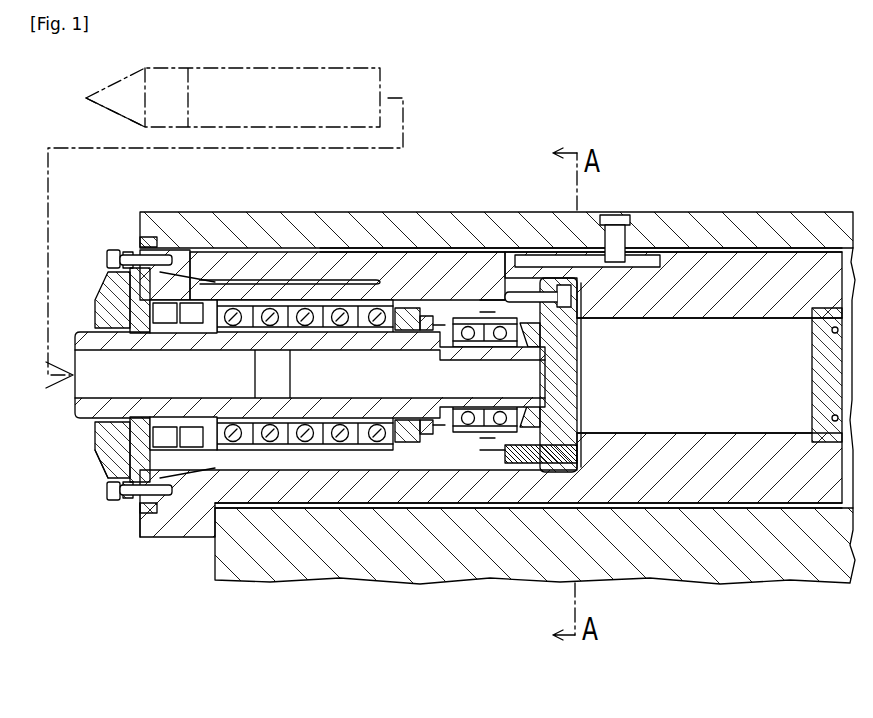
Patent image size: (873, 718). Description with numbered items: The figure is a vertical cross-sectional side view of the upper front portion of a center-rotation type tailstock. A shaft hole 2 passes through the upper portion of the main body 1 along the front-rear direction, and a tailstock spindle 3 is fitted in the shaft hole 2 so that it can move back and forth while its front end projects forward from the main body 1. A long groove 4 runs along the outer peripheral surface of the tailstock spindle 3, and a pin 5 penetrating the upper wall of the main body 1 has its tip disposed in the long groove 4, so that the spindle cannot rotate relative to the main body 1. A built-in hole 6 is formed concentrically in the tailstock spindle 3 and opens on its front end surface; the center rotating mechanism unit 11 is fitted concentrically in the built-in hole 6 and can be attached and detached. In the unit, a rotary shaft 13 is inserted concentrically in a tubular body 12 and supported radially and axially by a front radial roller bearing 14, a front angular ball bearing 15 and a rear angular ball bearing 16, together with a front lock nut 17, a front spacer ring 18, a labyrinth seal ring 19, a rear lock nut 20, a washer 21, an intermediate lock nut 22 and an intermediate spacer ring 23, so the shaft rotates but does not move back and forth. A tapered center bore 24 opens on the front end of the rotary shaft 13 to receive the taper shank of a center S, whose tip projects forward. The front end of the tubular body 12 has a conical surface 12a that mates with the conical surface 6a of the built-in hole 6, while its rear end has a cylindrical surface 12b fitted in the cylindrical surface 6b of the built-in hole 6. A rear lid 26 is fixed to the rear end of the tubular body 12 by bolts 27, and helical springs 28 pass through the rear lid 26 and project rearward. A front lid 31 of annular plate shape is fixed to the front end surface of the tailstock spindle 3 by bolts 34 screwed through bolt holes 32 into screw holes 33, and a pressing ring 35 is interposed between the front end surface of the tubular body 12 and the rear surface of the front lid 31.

The main body 1 is at (765, 212).
The shaft hole 2 is at (462, 265).
The tailstock spindle 3 is at (418, 250).
The long groove 4 is at (666, 258).
The pin 5 is at (616, 214).
The built-in hole 6 is at (278, 298).
The conical surface 6a is at (172, 475).
The cylindrical surface 6b is at (488, 310).
The center rotating mechanism unit 11 is at (604, 380).
The tubular body 12 is at (315, 300).
The conical surface 12a is at (206, 565).
The cylindrical surface 12b is at (508, 271).
The rotary shaft 13 is at (375, 343).
The front radial roller bearing 14 is at (188, 303).
The front angular ball bearing 15 is at (236, 303).
The rear angular ball bearing 16 is at (454, 433).
The front lock nut 17 is at (98, 440).
The front spacer ring 18 is at (107, 450).
The labyrinth seal ring 19 is at (112, 487).
The rear lock nut 20 is at (583, 412).
The washer 21 is at (630, 433).
The intermediate lock nut 22 is at (418, 434).
The intermediate spacer ring 23 is at (397, 447).
The center bore 24 is at (100, 400).
The rear lid 26 is at (583, 397).
The bolt 27 is at (560, 288).
The helical spring 28 is at (523, 463).
The front lid 31 is at (102, 290).
The bolt hole 32 is at (126, 500).
The screw hole 33 is at (158, 513).
The bolt 34 is at (110, 250).
The pressing ring 35 is at (137, 268).
The center S is at (380, 77).